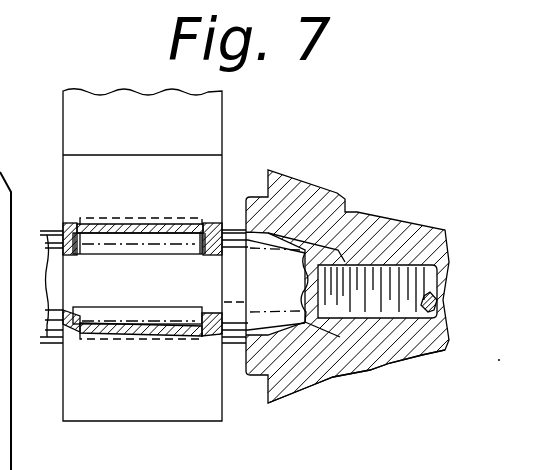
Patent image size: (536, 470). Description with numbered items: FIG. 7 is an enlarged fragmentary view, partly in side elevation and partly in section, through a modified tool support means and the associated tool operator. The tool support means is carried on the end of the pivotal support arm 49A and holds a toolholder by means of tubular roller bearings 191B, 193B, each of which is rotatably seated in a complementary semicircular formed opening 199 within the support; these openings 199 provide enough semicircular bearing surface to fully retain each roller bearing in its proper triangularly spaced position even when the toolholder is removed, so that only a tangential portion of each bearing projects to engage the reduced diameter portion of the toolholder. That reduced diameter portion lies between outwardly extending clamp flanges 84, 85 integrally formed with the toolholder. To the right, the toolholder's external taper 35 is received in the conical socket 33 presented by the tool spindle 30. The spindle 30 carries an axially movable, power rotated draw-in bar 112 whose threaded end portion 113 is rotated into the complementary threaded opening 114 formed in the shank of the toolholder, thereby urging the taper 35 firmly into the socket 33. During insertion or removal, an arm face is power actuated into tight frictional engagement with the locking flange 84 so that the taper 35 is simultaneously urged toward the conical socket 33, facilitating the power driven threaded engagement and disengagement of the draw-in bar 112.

The pivotal support arm 49A is at (78, 106).
The semicircular formed openings 199 is at (99, 212).
The tubular roller bearing 191B is at (148, 241).
The tubular roller bearing 193B is at (139, 318).
The clamp flange 85 is at (69, 338).
The locking flange 84 is at (212, 343).
The tool spindle 30 is at (279, 186).
The external toolholder taper 35 is at (296, 235).
The threaded end portion 113 is at (376, 280).
The draw-in bar 112 is at (420, 312).
The threaded opening 114 is at (330, 312).
The conical socket 33 is at (300, 391).